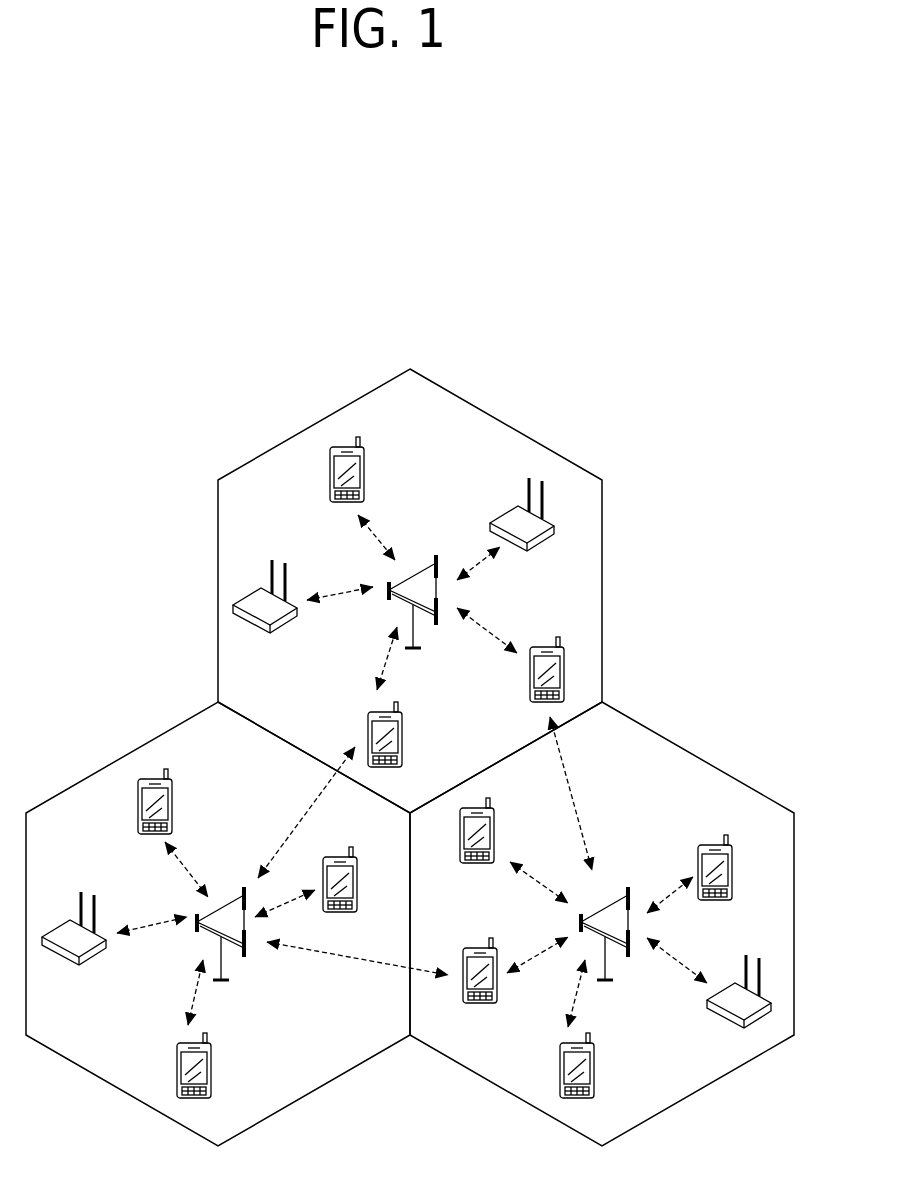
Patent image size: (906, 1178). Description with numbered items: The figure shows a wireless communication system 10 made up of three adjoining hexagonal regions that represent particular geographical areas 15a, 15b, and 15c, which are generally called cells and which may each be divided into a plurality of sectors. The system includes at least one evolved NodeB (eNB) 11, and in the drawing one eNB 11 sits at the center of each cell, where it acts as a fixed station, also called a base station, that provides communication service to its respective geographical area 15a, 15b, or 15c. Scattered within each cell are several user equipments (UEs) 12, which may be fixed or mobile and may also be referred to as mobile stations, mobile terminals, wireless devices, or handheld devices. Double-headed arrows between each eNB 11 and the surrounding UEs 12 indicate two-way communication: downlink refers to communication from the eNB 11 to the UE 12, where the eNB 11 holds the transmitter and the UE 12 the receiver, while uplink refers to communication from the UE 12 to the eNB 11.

The wireless communication system 10 is at (410, 757).
The evolved NodeB (eNB) 11 is at (424, 568).
The user equipment (UE) 12 is at (365, 473).
The geographical area (cell) 15a is at (602, 581).
The geographical area (cell) 15b is at (722, 770).
The geographical area (cell) 15c is at (100, 769).